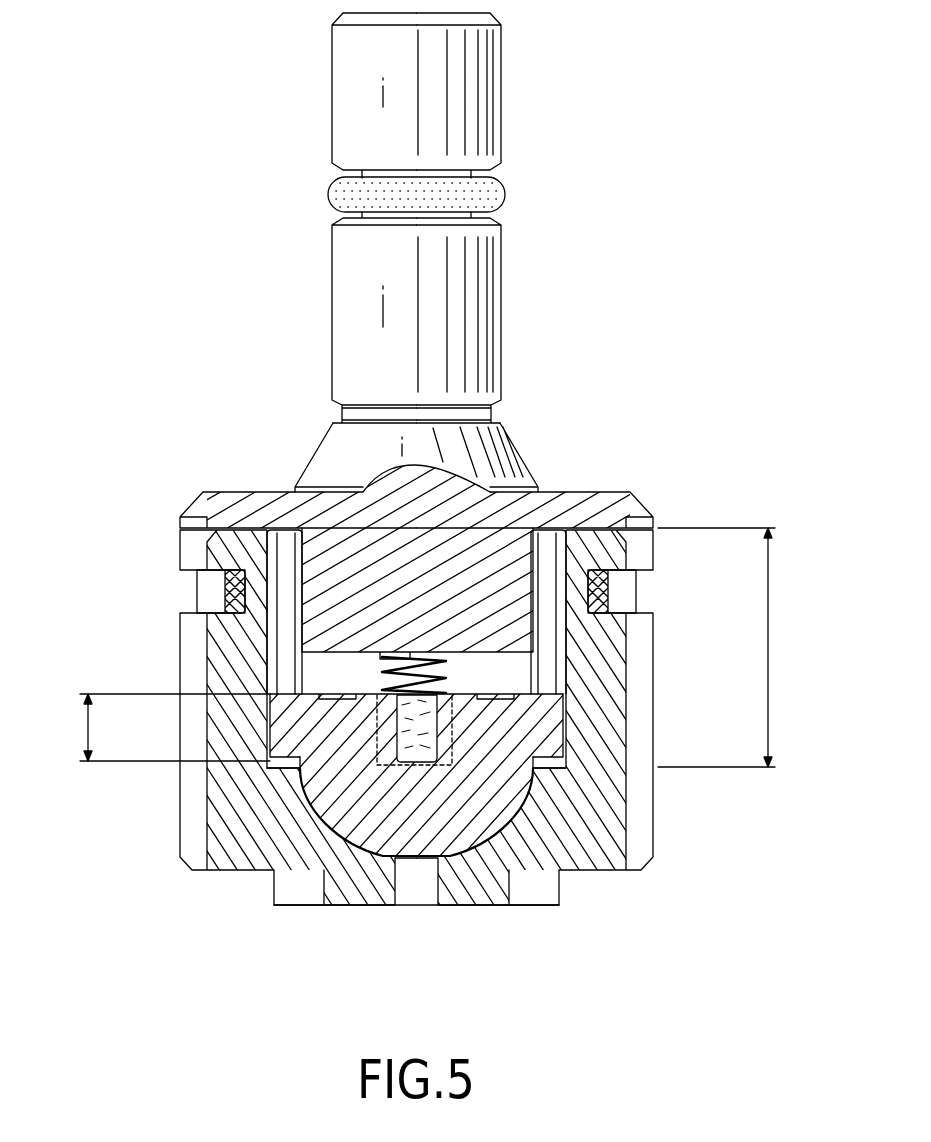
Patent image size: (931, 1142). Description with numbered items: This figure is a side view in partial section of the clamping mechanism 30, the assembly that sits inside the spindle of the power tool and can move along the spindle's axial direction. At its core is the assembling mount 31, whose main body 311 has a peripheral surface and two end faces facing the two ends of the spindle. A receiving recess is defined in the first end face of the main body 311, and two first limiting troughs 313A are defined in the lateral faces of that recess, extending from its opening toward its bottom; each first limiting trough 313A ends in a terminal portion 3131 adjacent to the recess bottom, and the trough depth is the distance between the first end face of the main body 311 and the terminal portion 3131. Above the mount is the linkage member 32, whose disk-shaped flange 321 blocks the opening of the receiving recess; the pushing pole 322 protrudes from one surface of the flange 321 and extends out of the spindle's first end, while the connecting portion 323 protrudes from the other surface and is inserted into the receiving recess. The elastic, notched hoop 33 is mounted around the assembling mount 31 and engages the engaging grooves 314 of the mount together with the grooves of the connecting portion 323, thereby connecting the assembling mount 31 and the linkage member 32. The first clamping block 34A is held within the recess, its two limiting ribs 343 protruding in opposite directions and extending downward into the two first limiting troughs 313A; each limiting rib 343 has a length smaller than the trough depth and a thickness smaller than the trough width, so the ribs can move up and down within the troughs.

The clamping mechanism 30 is at (157, 362).
The assembling mount 31 is at (667, 843).
The main body 311 is at (583, 848).
The first limiting trough 313A is at (269, 580).
The terminal portion 3131 is at (553, 762).
The engaging groove 314 is at (239, 598).
The linkage member 32 is at (583, 475).
The flange 321 is at (608, 517).
The pushing pole 322 is at (480, 97).
The connecting portion 323 is at (480, 612).
The hoop 33 is at (637, 588).
The limiting rib 343 is at (284, 740).
The first clamping block 34A is at (447, 833).